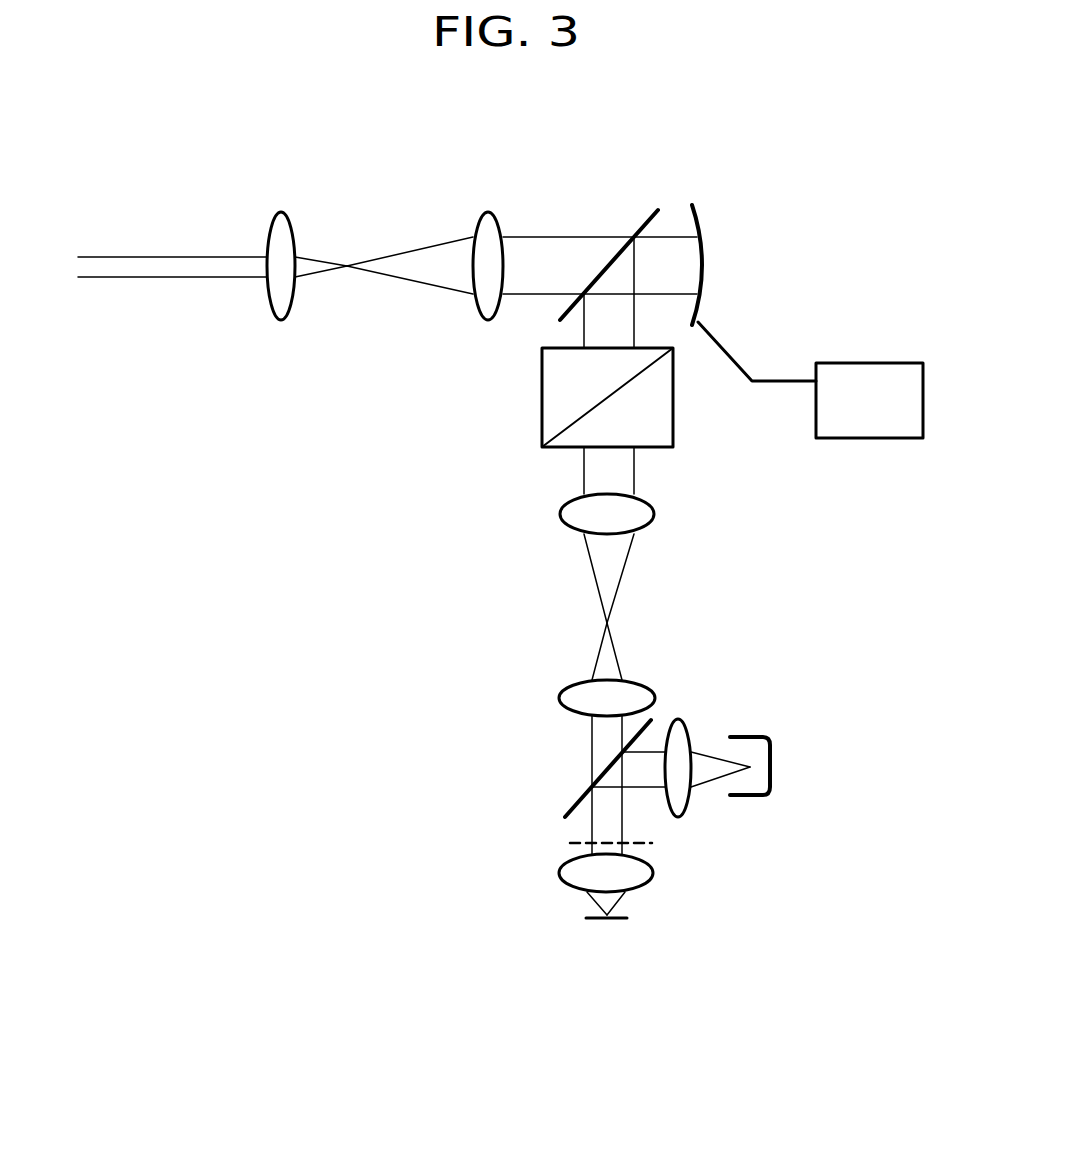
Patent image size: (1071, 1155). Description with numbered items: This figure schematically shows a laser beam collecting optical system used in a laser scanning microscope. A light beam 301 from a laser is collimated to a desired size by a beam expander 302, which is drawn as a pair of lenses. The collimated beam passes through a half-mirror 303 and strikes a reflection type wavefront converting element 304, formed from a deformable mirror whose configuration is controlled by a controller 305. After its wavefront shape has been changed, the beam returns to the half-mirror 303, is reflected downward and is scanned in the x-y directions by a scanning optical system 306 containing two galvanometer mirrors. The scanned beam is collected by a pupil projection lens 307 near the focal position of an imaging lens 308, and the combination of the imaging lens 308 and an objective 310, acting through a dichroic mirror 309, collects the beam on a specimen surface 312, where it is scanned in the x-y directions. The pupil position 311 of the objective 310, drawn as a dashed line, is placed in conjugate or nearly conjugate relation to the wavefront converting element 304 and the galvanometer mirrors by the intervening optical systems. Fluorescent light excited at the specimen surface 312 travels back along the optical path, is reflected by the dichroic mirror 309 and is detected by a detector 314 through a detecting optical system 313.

The light beam 301 is at (140, 257).
The beam expander 302 is at (510, 184).
The half-mirror 303 is at (647, 222).
The reflection type wavefront converting element 304 is at (701, 223).
The controller 305 is at (870, 363).
The scanning optical system 306 is at (542, 400).
The pupil projection lens 307 is at (560, 514).
The imaging lens 308 is at (560, 698).
The dichroic mirror 309 is at (590, 792).
The objective 310 is at (560, 873).
The pupil position 311 is at (570, 843).
The specimen surface 312 is at (613, 921).
The detecting optical system 313 is at (686, 812).
The detector 314 is at (775, 768).